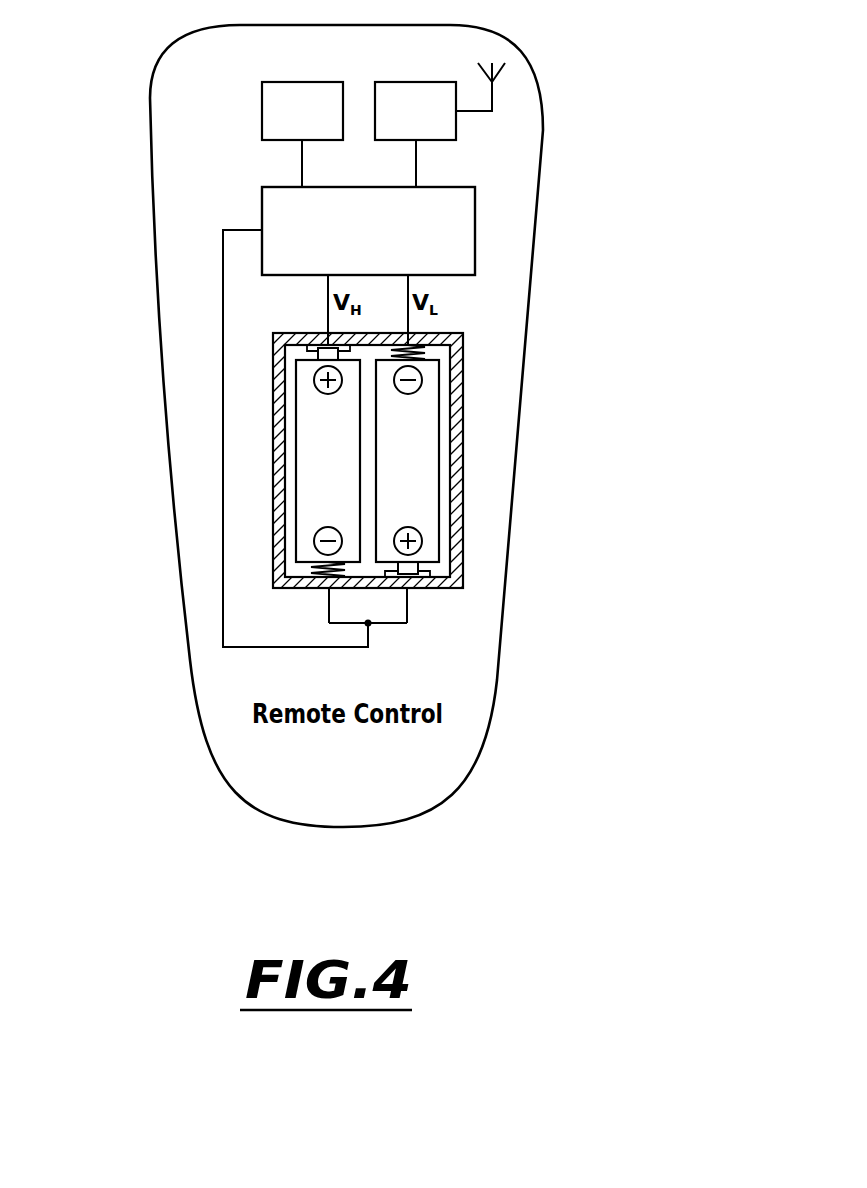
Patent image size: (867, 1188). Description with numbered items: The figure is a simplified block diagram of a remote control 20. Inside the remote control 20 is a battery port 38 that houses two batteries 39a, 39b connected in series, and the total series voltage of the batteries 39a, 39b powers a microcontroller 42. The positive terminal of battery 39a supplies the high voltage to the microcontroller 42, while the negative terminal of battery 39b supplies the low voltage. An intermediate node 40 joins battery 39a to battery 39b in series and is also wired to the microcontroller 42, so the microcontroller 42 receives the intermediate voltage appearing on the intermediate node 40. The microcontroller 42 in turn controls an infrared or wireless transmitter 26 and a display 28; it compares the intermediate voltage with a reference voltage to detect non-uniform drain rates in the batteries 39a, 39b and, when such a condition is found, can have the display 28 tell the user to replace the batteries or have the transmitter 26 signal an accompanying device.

The remote control 20 is at (150, 98).
The display 28 is at (314, 120).
The transmitter 26 is at (427, 120).
The microcontroller 42 is at (465, 208).
The battery port 38 is at (458, 408).
The battery 39a is at (315, 497).
The battery 39b is at (420, 498).
The intermediate node 40 is at (370, 626).